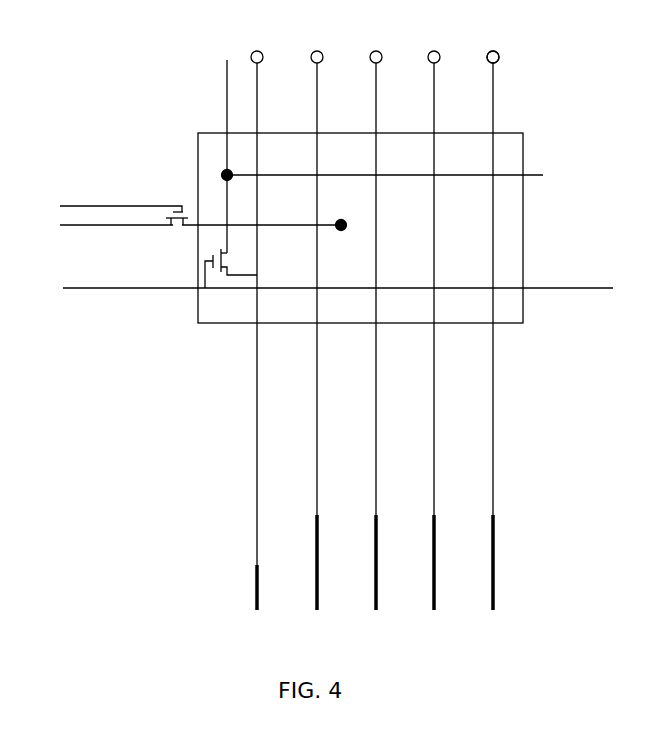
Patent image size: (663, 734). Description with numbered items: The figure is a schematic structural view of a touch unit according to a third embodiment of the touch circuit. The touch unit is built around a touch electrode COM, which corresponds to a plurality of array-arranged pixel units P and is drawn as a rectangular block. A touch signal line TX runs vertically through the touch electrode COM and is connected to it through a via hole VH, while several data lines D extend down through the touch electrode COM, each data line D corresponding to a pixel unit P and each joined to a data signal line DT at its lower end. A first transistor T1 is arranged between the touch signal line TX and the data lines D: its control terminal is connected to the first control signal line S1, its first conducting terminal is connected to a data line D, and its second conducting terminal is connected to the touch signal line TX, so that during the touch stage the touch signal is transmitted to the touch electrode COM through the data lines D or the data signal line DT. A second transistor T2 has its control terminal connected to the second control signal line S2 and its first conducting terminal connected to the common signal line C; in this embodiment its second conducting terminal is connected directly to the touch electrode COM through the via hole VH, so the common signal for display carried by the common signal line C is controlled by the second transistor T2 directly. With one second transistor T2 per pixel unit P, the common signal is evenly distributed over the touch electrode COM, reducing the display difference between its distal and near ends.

The touch electrode COM is at (197, 134).
The touch signal line TX is at (225, 146).
The data line D is at (382, 330).
The pixel unit P is at (497, 62).
The data signal line DT is at (380, 581).
The via hole VH is at (341, 225).
The second control signal line S2 is at (105, 206).
The second transistor T2 is at (180, 202).
The common signal line C is at (185, 228).
The first transistor T1 is at (211, 268).
The first control signal line S1 is at (322, 288).